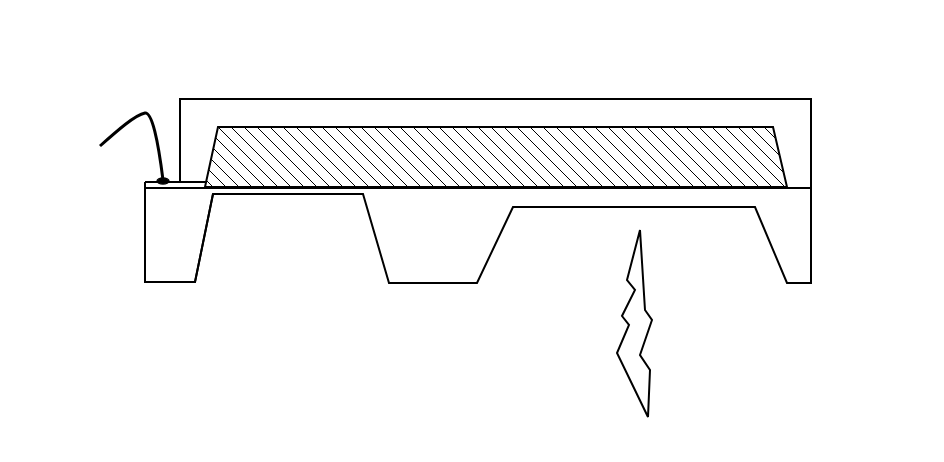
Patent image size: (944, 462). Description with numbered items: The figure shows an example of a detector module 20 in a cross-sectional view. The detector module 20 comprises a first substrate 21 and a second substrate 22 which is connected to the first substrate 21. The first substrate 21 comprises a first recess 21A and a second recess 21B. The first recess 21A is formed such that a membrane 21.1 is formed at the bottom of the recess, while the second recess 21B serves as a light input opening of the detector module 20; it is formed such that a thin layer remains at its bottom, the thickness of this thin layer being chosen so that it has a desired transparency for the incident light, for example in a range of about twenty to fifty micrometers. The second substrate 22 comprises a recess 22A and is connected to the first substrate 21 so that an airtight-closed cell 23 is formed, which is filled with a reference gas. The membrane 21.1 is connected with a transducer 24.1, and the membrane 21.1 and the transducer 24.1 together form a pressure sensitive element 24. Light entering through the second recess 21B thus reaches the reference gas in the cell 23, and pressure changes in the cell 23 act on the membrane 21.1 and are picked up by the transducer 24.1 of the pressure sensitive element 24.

The detector module 20 is at (758, 51).
The first substrate 21 is at (473, 240).
The first recess 21A is at (337, 195).
The second recess 21B is at (577, 207).
The membrane 21.1 is at (257, 195).
The second substrate 22 is at (646, 110).
The recess 22A is at (320, 136).
The airtight-closed cell 23 is at (480, 148).
The pressure sensitive element 24 is at (120, 185).
The transducer 24.1 is at (173, 185).